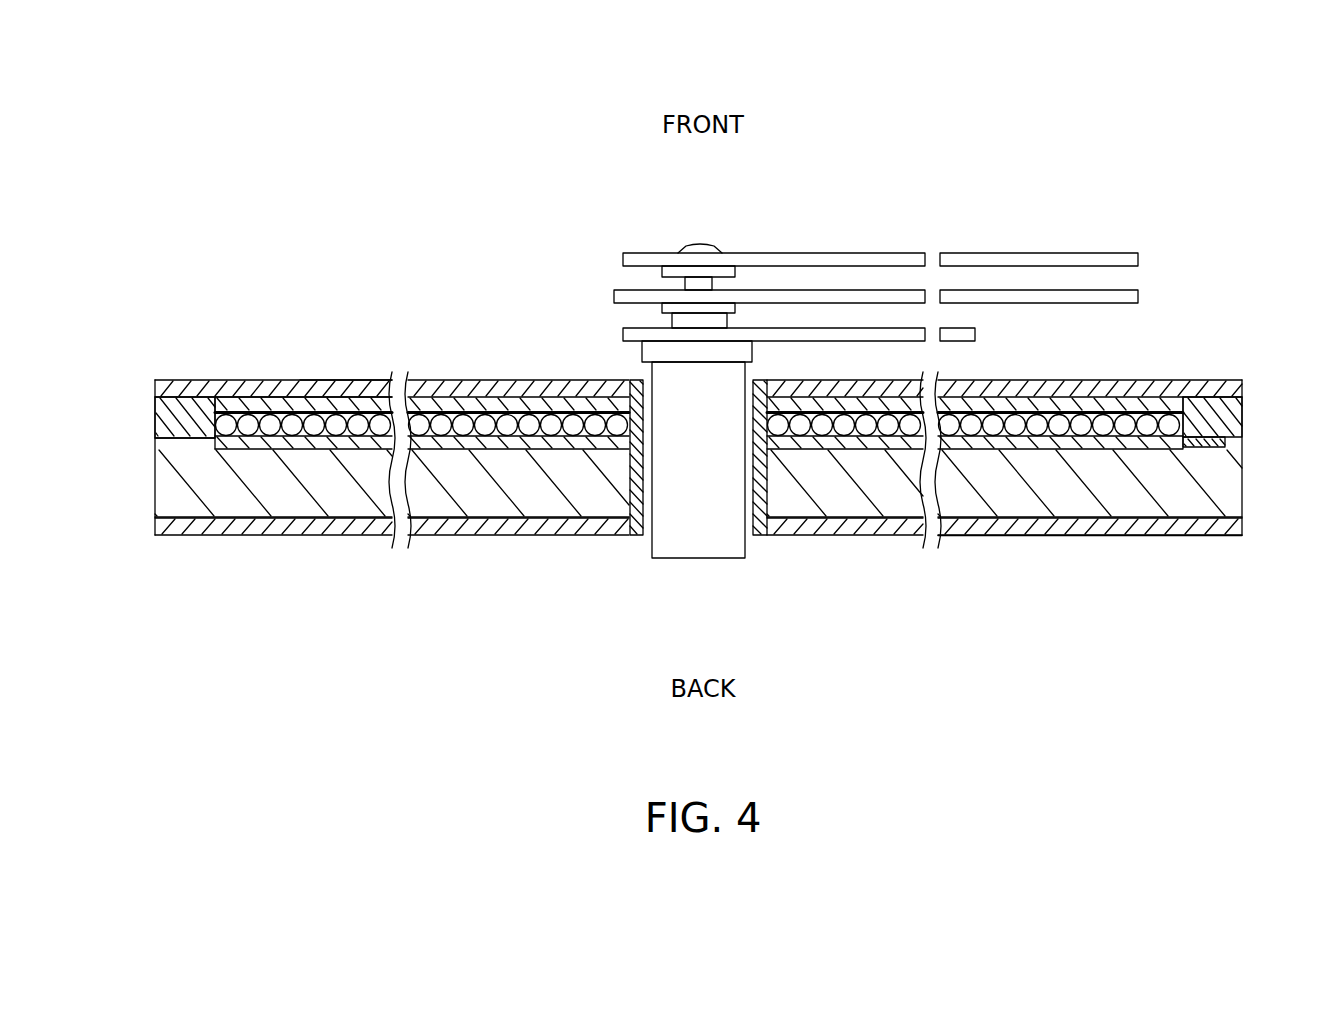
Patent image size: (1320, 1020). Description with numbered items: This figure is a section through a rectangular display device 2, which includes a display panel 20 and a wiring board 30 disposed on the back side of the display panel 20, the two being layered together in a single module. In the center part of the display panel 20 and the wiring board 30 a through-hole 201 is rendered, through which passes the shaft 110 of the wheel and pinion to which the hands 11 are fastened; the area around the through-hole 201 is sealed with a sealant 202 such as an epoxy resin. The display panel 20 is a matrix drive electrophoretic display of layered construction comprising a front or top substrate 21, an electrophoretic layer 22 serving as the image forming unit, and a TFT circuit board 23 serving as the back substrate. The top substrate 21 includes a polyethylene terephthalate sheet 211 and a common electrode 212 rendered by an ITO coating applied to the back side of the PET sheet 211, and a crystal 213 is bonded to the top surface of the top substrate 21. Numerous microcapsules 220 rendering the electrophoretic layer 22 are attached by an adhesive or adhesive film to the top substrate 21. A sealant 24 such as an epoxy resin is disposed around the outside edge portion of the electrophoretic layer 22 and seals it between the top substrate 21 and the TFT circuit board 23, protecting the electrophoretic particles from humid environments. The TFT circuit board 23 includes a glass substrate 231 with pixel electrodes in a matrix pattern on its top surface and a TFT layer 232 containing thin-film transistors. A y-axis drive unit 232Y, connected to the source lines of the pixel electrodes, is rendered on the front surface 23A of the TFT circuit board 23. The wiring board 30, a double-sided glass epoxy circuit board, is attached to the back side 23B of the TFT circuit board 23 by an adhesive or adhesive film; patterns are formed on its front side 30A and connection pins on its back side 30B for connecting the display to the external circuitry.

The display device 2 is at (1162, 345).
The hands 11 is at (873, 333).
The shaft 110 is at (660, 372).
The display panel 20 is at (1257, 380).
The top substrate 21 is at (213, 271).
The PET sheet 211 is at (236, 400).
The common electrode 212 is at (307, 397).
The electrophoretic layer 22 is at (433, 398).
The microcapsules 220 is at (367, 380).
The TFT circuit board 23 is at (566, 271).
The glass substrate 231 is at (478, 453).
The TFT layer 232 is at (507, 425).
The front surface of TFT circuit board 23A is at (181, 380).
The back side of TFT circuit board 23B is at (227, 537).
The sealant 24 is at (188, 430).
The wiring board 30 is at (1244, 525).
The front side of wiring board 30A is at (1087, 517).
The back side of wiring board 30B is at (1110, 537).
The through-hole 201 is at (745, 520).
The sealant 202 is at (637, 537).
The crystal 213 is at (1072, 382).
The y-axis drive unit 232Y is at (1200, 447).